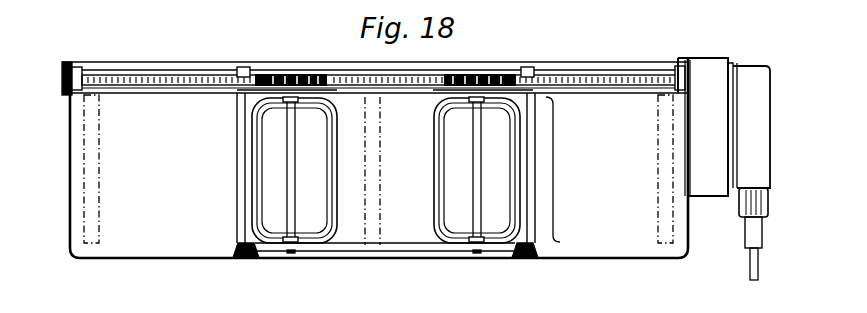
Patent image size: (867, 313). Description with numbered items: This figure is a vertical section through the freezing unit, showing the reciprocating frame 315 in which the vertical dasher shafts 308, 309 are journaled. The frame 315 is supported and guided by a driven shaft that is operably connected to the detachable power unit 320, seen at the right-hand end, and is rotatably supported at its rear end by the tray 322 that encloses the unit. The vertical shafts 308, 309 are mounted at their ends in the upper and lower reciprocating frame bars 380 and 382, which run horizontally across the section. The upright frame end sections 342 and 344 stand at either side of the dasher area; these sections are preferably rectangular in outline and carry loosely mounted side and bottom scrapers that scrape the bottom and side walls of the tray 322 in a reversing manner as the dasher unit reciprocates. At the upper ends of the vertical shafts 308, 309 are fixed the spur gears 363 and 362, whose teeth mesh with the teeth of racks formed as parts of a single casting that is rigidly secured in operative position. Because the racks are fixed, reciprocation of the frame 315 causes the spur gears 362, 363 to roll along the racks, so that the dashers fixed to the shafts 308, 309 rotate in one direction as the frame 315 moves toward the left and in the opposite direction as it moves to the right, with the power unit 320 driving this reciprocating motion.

The detachable power unit 320 is at (752, 65).
The tray 322 is at (69, 157).
The upright frame end section 342 is at (240, 162).
The upright frame end section 344 is at (537, 102).
The spur gear 362 is at (483, 72).
The spur gear 363 is at (280, 72).
The upper reciprocating frame bar 380 is at (414, 95).
The lower reciprocating frame bar 382 is at (405, 246).
The vertical shaft 308 is at (292, 197).
The vertical shaft 309 is at (480, 191).
The reciprocating frame 315 is at (555, 170).